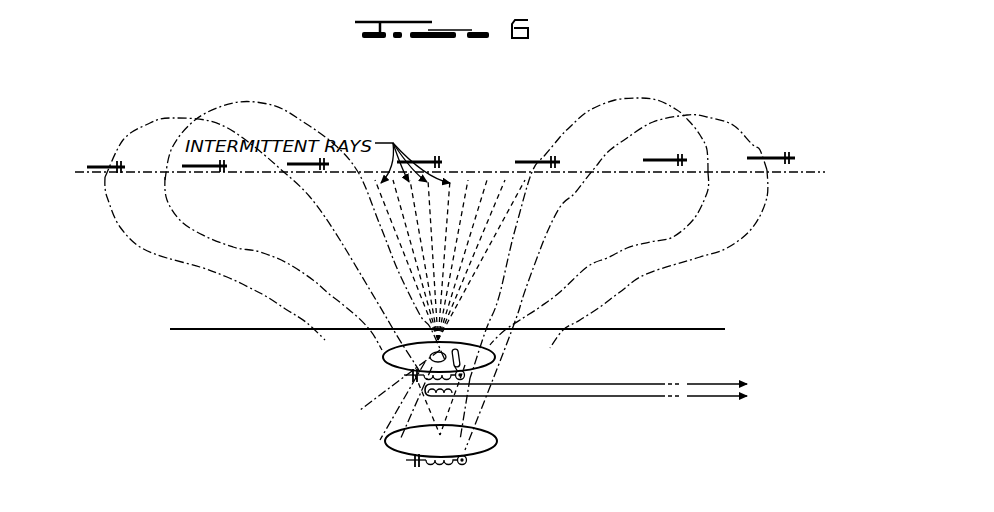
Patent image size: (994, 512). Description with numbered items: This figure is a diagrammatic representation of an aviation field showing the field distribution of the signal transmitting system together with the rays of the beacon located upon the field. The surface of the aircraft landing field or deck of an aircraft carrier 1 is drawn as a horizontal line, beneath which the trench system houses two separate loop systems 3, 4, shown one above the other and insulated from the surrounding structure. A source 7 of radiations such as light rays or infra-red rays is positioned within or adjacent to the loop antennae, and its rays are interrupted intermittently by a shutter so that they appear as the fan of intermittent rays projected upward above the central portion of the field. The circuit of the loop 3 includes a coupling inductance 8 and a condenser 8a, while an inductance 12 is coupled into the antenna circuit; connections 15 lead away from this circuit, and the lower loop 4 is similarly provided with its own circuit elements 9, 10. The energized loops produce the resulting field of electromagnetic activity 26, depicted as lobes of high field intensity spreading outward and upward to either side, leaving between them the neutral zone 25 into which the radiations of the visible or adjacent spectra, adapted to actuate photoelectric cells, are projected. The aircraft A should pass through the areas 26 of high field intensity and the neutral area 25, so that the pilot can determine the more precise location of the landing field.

The surface of the aircraft landing field 1 is at (236, 331).
The loop system 3 is at (381, 356).
The loop system 4 is at (387, 445).
The source of radiations 7 is at (408, 376).
The coupling inductance 8 is at (462, 352).
The condenser 8a is at (417, 385).
The lower battery 9 is at (418, 470).
The lower coil 10 is at (445, 470).
The inductance 12 is at (452, 391).
The signal transmission lines 15 is at (710, 399).
The neutral zone 25 is at (468, 165).
The field of electromagnetic activity 26 is at (617, 184).
The aircraft A is at (424, 153).